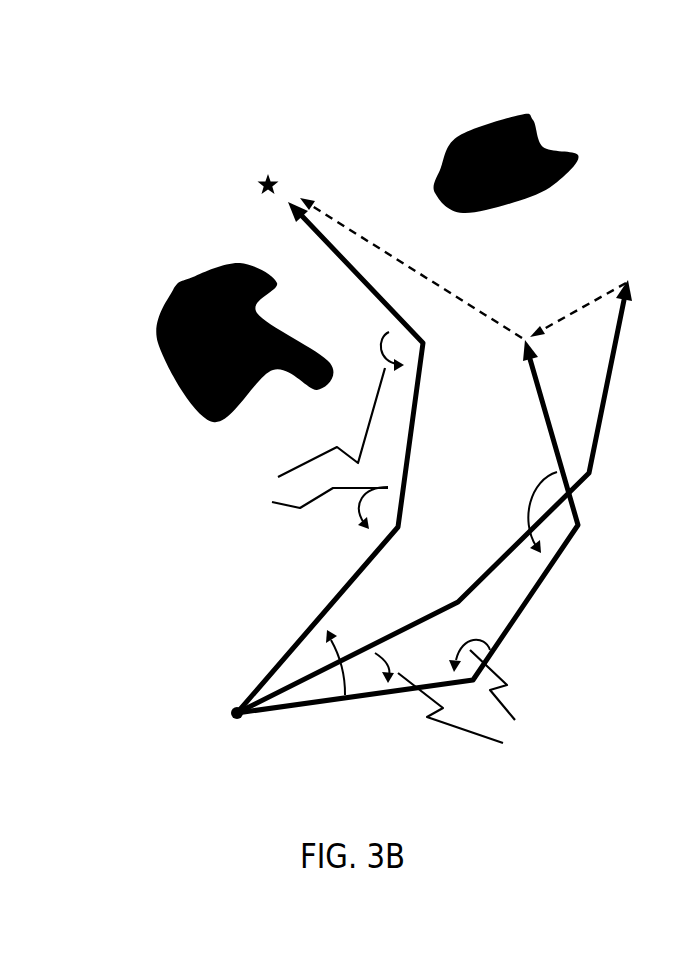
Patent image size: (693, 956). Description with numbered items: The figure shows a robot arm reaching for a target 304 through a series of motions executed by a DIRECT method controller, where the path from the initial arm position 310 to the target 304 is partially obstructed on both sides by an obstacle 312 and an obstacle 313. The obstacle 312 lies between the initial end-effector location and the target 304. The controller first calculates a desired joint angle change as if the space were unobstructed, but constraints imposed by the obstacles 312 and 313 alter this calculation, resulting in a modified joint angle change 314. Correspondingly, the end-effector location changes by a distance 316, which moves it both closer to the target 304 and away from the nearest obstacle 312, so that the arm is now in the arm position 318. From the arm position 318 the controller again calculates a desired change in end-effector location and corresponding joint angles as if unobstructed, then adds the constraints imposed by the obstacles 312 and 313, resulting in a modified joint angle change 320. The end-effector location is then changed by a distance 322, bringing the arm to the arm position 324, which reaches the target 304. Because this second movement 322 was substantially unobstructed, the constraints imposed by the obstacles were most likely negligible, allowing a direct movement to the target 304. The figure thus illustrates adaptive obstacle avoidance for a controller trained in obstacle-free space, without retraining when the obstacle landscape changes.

The target 304 is at (221, 132).
The initial arm position 310 is at (463, 496).
The obstacle 312 is at (504, 123).
The obstacle 313 is at (197, 337).
The modified joint angle change 314 is at (473, 636).
The end-effector location change 316 is at (603, 243).
The arm position 318 is at (407, 526).
The modified joint angle change 320 is at (305, 513).
The end-effector location change 322 is at (411, 224).
The arm position 324 is at (292, 456).